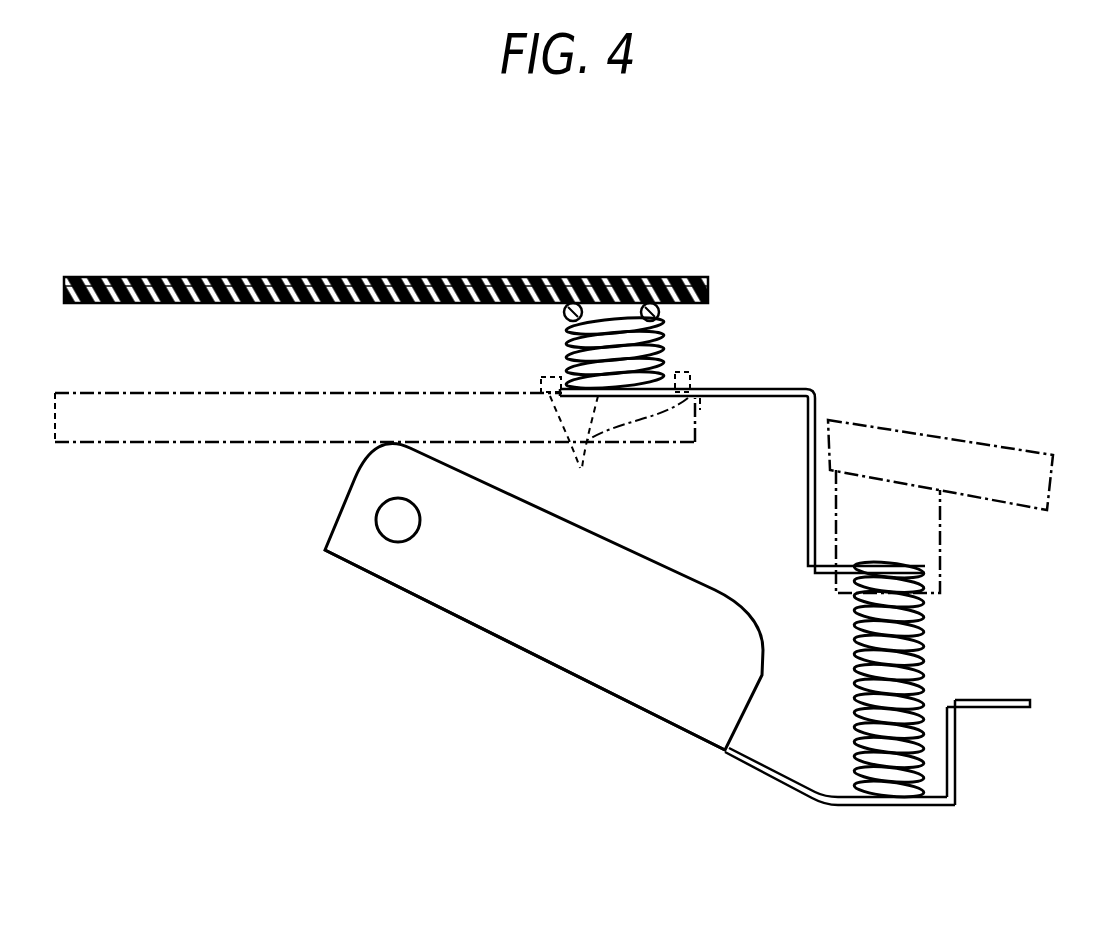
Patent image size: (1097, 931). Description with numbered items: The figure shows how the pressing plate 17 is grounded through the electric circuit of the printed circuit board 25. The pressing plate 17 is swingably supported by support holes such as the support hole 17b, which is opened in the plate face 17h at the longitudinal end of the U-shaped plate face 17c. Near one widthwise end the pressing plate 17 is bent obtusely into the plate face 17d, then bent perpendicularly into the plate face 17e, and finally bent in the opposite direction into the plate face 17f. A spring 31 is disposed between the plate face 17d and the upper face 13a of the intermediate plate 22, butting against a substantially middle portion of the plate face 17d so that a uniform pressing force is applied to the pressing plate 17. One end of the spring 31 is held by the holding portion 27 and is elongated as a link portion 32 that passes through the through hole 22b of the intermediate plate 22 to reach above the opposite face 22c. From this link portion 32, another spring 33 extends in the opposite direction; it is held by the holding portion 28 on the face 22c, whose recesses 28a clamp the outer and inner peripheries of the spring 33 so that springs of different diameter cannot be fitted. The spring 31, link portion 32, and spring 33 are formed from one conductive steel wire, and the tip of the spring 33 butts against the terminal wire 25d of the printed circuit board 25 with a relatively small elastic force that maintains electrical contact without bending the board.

The upper face of the transport path 13a is at (648, 445).
The pressing plate 17 is at (669, 669).
The support hole 17b is at (380, 528).
The plate face 17c is at (520, 650).
The plate face 17d is at (893, 810).
The plate face 17e is at (960, 757).
The plate face 17f is at (1005, 708).
The plate face 17h is at (572, 598).
The intermediate plate 22 is at (935, 412).
The through hole 22b is at (700, 410).
The face of the intermediate plate 22c is at (383, 390).
The printed circuit board 25 is at (327, 278).
The terminal wire 25d is at (670, 300).
The holding portion 27 is at (942, 538).
The holding portion 28 is at (580, 468).
The recesses 28a is at (548, 372).
The spring 31 is at (945, 655).
The link portion 32 is at (755, 390).
The spring 33 is at (690, 322).